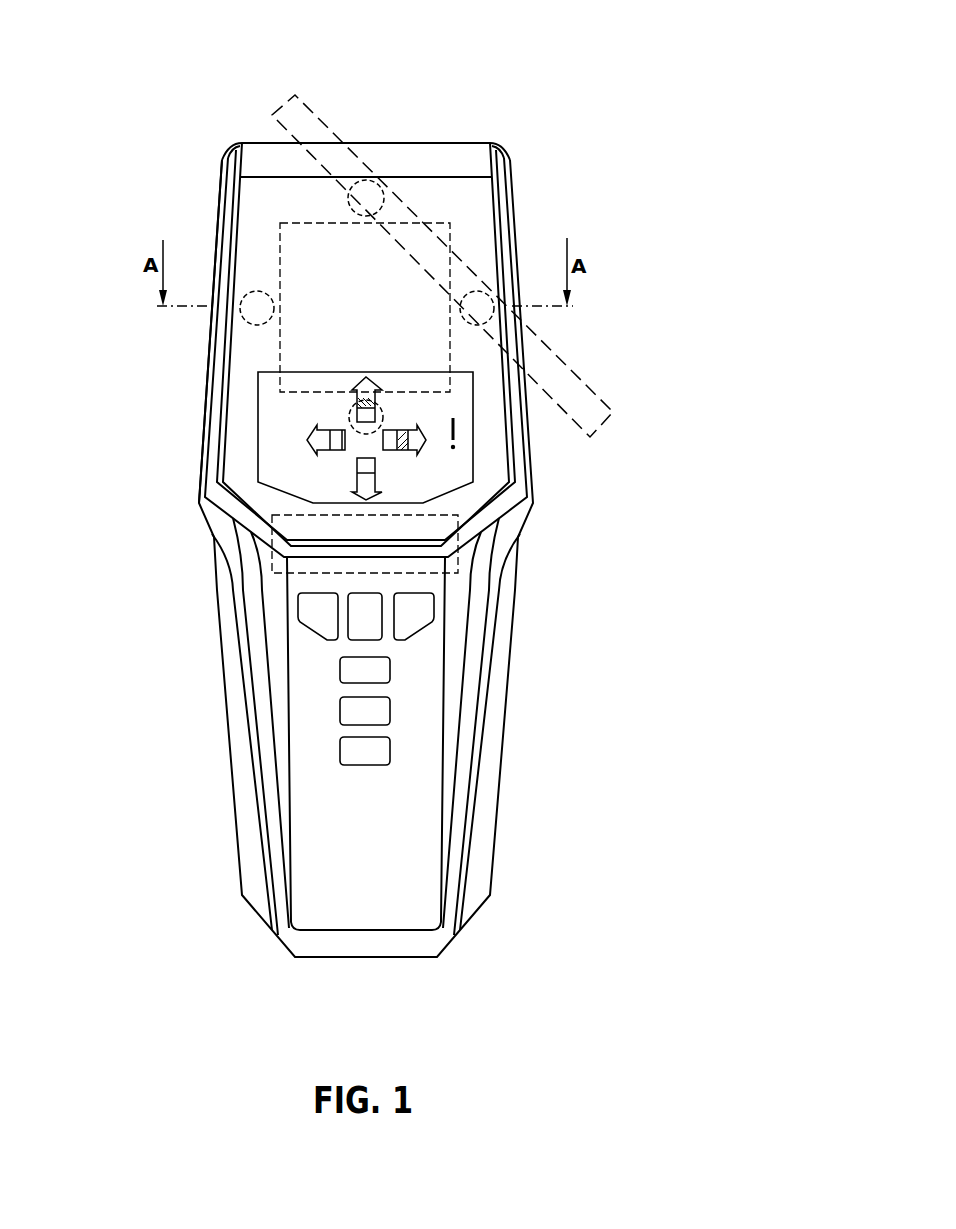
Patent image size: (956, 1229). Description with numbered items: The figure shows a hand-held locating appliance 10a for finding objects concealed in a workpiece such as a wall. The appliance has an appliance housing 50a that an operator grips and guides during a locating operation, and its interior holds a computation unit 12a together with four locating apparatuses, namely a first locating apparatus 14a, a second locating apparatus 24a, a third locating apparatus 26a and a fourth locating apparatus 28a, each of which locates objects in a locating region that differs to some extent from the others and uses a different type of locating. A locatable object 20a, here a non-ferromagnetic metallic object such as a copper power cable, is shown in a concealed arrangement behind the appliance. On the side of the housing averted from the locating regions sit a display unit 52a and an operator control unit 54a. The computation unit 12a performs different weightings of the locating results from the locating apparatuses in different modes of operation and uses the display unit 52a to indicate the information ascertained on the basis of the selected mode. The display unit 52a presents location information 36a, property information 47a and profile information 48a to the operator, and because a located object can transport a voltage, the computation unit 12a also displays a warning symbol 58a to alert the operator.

The hand-held locating appliance 10a is at (514, 102).
The computation unit 12a is at (465, 527).
The first locating apparatus 14a is at (273, 299).
The fourth locating apparatus 28a is at (285, 250).
The locatable object 20a is at (590, 393).
The second locating apparatus 24a is at (361, 262).
The third locating apparatus 26a is at (372, 184).
The location information 36a is at (237, 463).
The property information 47a is at (237, 463).
The profile information 48a is at (322, 468).
The appliance housing 50a is at (215, 462).
The display unit 52a is at (457, 465).
The operator control unit 54a is at (412, 662).
The warning symbol 58a is at (474, 430).